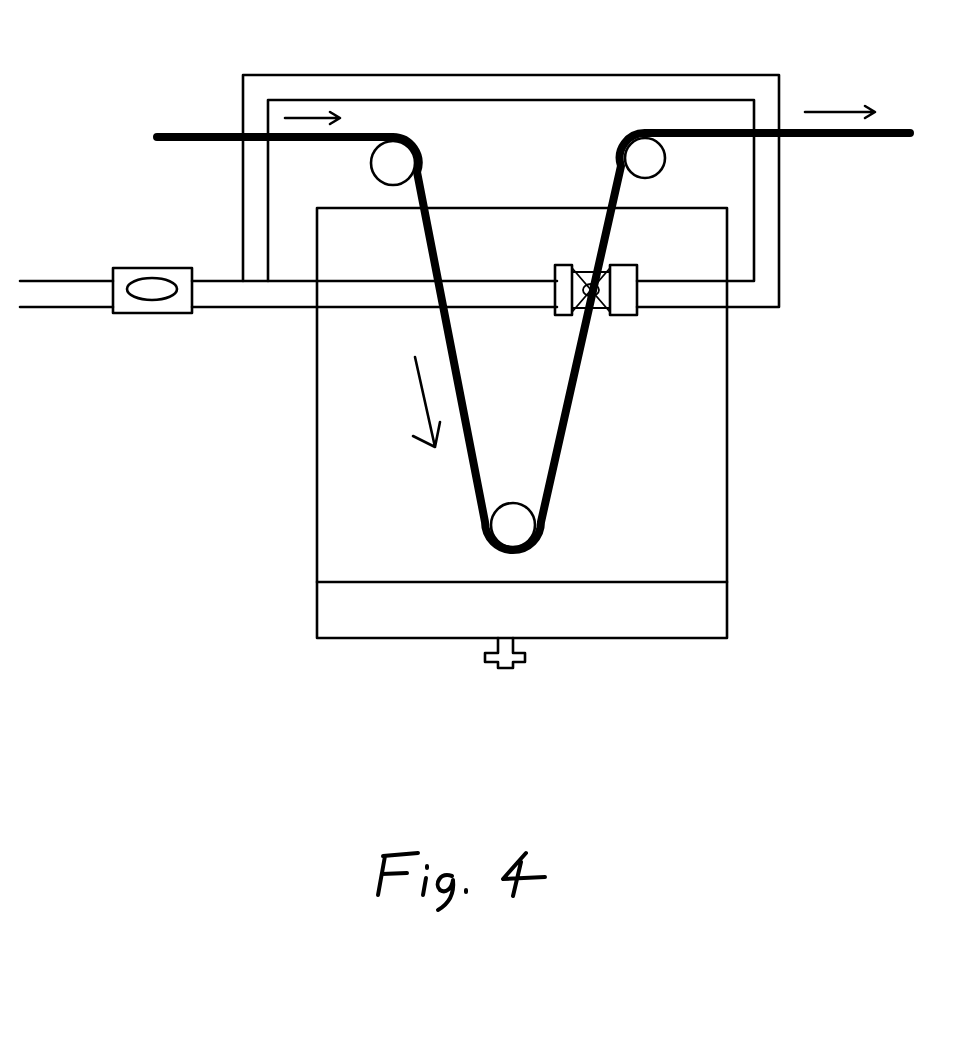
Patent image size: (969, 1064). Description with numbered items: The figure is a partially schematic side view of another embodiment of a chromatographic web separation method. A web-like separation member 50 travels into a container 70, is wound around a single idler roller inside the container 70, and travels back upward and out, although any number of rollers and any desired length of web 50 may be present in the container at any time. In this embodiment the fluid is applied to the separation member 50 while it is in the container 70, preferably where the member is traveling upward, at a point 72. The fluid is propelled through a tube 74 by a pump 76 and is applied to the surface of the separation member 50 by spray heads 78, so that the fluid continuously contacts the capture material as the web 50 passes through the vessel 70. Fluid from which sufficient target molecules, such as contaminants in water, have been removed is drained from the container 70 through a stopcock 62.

The separation member 50 is at (190, 135).
The tube 74 is at (403, 75).
The pump 76 is at (162, 268).
The spray heads 78 is at (555, 268).
The point 72 is at (577, 318).
The container 70 is at (728, 545).
The stopcock 62 is at (518, 665).